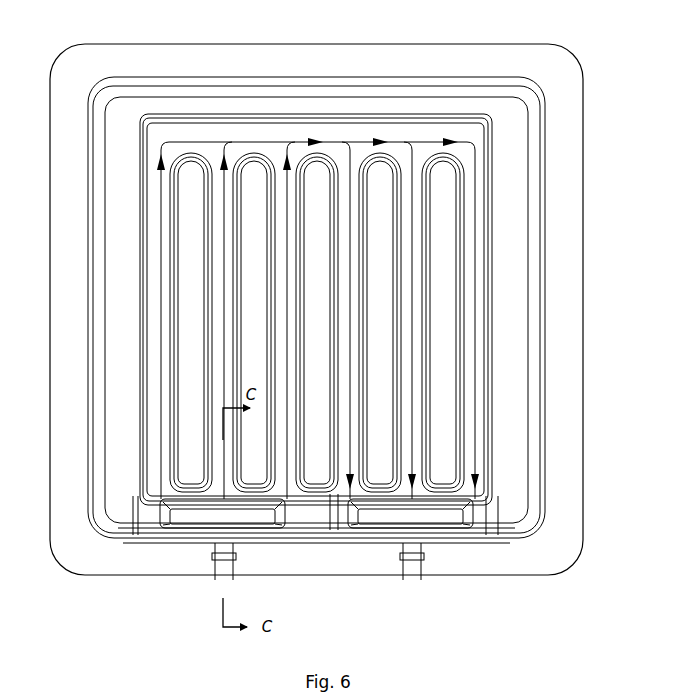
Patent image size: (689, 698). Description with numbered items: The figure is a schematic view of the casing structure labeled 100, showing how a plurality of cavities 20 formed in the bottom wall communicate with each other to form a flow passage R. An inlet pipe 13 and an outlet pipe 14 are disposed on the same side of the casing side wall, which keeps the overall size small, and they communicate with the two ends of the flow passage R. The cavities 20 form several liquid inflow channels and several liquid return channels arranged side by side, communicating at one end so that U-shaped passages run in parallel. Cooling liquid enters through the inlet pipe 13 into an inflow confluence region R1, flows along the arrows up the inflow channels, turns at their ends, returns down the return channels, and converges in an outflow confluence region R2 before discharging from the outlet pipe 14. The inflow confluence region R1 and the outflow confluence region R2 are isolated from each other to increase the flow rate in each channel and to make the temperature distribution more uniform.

The liquid cooling plate 100 is at (314, 31).
The cavities 20 is at (153, 327).
The flow passage R is at (478, 317).
The inflow confluence region R1 is at (192, 522).
The outflow confluence region R2 is at (435, 522).
The inlet pipe 13 is at (214, 590).
The outlet pipe 14 is at (410, 588).